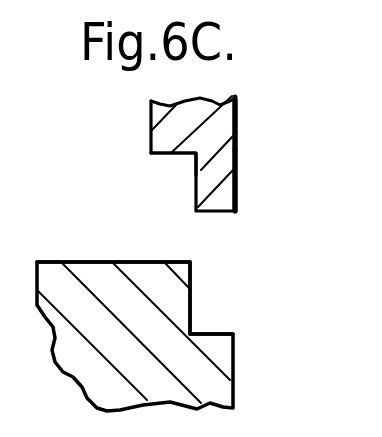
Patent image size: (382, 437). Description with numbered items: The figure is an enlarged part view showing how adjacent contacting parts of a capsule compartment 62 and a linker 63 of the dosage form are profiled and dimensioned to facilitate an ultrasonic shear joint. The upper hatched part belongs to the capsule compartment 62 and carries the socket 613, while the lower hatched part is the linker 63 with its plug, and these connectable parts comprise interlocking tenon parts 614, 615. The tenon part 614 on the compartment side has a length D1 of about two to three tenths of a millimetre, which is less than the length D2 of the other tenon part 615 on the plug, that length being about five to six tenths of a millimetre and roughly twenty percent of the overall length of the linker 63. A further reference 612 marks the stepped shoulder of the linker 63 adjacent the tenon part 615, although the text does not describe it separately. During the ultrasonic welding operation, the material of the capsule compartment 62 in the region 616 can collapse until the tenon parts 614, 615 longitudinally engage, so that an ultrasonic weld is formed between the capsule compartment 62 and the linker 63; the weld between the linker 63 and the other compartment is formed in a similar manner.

The capsule compartment 62 is at (190, 133).
The region 616 is at (162, 128).
The socket 613 is at (175, 163).
The tenon part 614 is at (238, 197).
The length of tenon part D1 is at (203, 169).
The linker 63 is at (172, 322).
The tenon part 615 is at (193, 265).
The length of tenon part D2 is at (195, 290).
The stepped shoulder of second member 612 is at (210, 332).